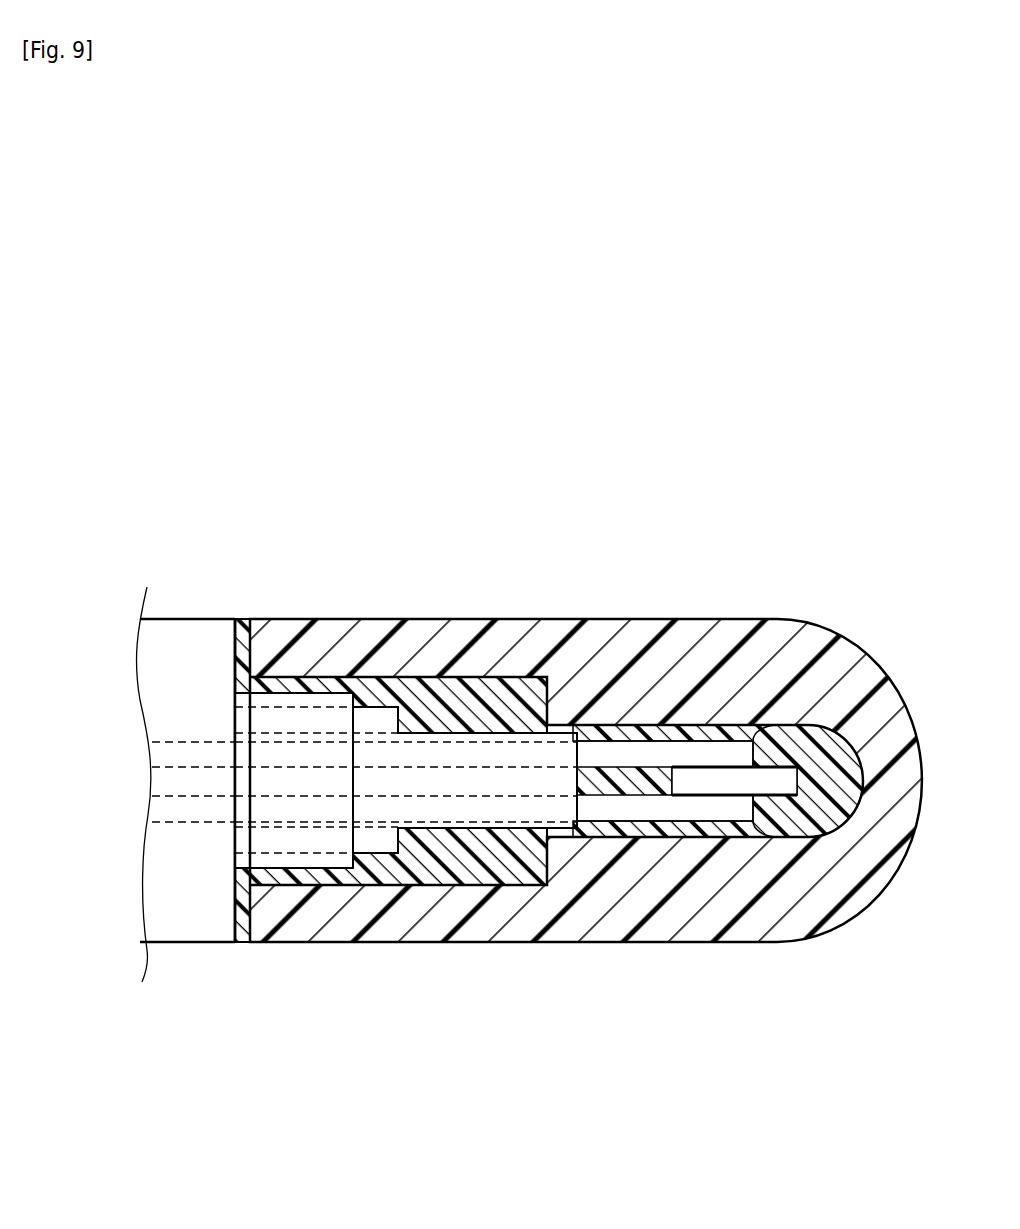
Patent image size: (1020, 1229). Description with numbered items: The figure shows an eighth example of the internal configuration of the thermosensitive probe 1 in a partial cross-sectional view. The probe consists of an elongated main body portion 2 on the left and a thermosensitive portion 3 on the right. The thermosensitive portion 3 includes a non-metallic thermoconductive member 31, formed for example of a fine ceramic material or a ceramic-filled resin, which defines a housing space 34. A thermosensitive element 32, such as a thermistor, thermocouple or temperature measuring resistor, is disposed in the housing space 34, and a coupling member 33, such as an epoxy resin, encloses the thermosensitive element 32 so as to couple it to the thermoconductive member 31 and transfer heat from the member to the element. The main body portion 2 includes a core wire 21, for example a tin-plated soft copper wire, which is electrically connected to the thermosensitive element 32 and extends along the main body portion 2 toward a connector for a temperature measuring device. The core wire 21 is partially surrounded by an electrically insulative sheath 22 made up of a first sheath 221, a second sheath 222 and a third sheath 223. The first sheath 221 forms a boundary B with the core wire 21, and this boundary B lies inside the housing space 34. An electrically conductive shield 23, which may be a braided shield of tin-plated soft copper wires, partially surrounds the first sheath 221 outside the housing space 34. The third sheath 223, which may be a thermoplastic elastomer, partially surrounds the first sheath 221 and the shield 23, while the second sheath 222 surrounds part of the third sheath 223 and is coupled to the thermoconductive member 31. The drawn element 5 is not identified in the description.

The thermosensitive probe 1 is at (549, 478).
The main body portion 2 is at (170, 574).
The core wire 21 is at (167, 758).
The sheath 22 is at (422, 507).
The first sheath 221 is at (450, 785).
The second sheath 222 is at (207, 630).
The third sheath 223 is at (307, 717).
The shield 23 is at (381, 848).
The thermosensitive portion 3 is at (771, 566).
The thermoconductive member 31 is at (807, 645).
The thermosensitive element 32 is at (720, 783).
The coupling member 33 is at (820, 747).
The housing space 34 is at (853, 805).
The sensor element 5 is at (801, 840).
The boundary B is at (580, 784).